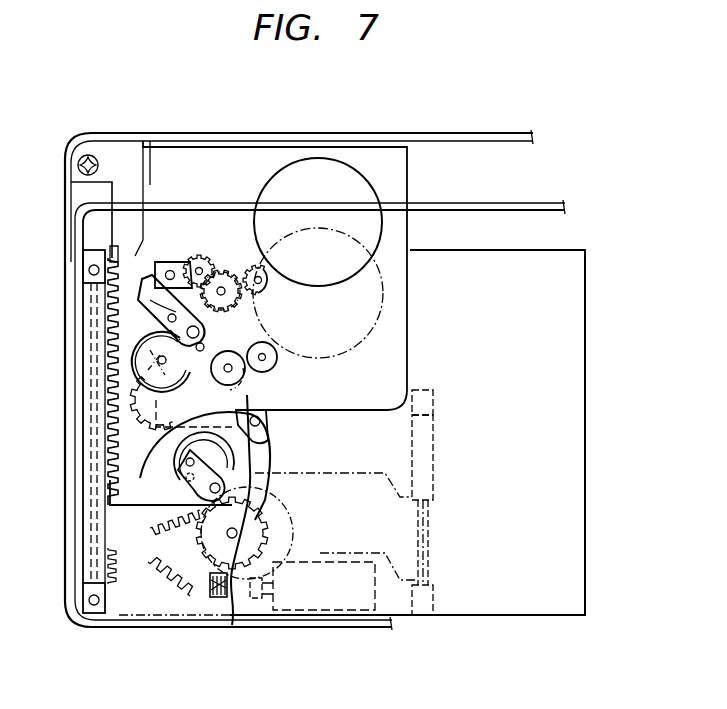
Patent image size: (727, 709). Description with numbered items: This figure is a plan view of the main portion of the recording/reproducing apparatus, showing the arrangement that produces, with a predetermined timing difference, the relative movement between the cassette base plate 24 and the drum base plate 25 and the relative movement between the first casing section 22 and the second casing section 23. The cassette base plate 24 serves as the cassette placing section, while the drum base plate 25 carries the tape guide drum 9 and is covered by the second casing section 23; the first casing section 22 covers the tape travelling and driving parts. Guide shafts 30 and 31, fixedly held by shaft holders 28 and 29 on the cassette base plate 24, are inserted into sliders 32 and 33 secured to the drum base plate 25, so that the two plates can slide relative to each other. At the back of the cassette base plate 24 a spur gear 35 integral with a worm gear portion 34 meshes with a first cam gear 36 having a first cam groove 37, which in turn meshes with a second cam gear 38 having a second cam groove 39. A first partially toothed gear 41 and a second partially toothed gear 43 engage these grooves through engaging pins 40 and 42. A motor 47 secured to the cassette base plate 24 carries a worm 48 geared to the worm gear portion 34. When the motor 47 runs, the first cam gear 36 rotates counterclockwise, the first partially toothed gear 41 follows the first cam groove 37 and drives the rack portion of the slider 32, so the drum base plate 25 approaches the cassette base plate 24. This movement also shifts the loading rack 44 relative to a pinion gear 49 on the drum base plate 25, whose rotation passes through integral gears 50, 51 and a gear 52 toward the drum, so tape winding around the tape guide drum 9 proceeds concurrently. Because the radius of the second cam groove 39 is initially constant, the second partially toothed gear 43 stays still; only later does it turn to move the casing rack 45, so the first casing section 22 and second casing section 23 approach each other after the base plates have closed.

The tape guide drum 9 is at (357, 168).
The first casing section 22 is at (304, 630).
The second casing section 23 is at (252, 208).
The cassette base plate 24 is at (556, 250).
The drum base plate 25 is at (407, 183).
The shaft holder 28 is at (88, 270).
The shaft holder 29 is at (434, 402).
The guide shaft 30 is at (108, 563).
The guide shaft 31 is at (424, 527).
The slider 32 is at (115, 436).
The slider 33 is at (434, 468).
The worm gear portion 34 is at (198, 560).
The spur gear 35 is at (198, 538).
The first cam gear 36 is at (165, 510).
The first cam groove 37 is at (140, 478).
The second cam gear 38 is at (148, 402).
The second cam groove 39 is at (140, 362).
The engaging pin 40 is at (186, 480).
The first partially toothed gear 41 is at (240, 428).
The engaging pin 42 is at (156, 323).
The second partially toothed gear 43 is at (138, 292).
The loading rack 44 is at (170, 270).
The casing rack 45 is at (110, 258).
The motor 47 is at (307, 562).
The worm 48 is at (215, 598).
The pinion gear 49 is at (197, 266).
The gear 50 is at (221, 274).
The gear 51 is at (240, 350).
The gear 52 is at (268, 296).